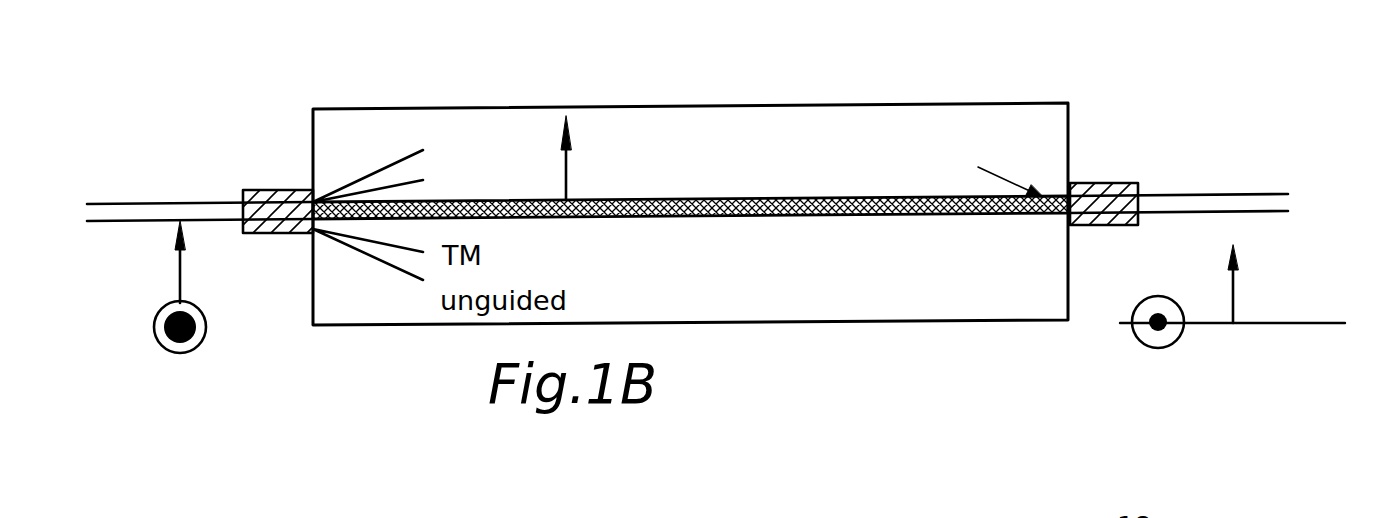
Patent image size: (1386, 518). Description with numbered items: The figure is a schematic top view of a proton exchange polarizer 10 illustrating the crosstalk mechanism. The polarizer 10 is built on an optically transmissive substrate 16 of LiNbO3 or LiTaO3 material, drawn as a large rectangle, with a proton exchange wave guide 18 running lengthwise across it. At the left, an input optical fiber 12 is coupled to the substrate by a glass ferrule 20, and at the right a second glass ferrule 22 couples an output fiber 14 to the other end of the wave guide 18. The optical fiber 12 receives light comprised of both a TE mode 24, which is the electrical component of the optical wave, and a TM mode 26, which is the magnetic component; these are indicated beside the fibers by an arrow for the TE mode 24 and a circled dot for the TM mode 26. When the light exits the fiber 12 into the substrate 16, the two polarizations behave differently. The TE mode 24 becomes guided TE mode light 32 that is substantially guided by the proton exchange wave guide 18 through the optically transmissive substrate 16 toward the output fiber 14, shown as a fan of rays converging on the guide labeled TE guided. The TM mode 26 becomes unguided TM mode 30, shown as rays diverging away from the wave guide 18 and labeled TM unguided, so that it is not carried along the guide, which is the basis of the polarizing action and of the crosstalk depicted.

The proton exchange polarizer 10 is at (1148, 78).
The optical fiber 12 is at (120, 215).
The output fiber 14 is at (1210, 193).
The optically transmissive substrate 16 is at (437, 117).
The proton exchange wave guide 18 is at (740, 216).
The glass ferrule 20 is at (270, 233).
The glass ferrule 22 is at (1100, 183).
The TE mode 24 is at (147, 278).
The TM mode 26 is at (248, 330).
The unguided TM mode 30 is at (388, 177).
The guided TE mode light 32 is at (568, 160).